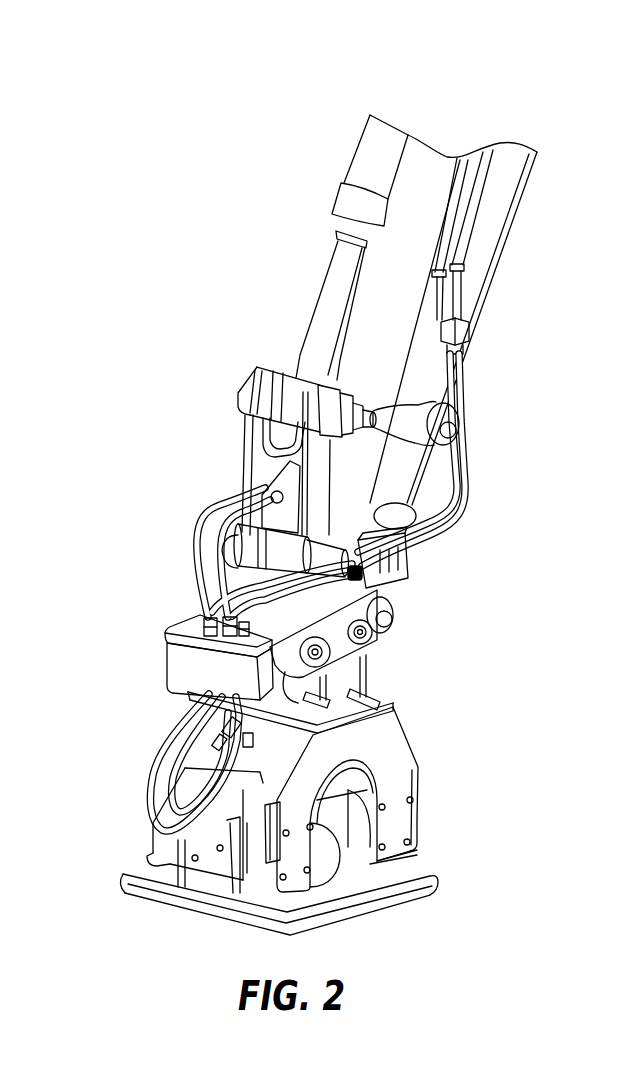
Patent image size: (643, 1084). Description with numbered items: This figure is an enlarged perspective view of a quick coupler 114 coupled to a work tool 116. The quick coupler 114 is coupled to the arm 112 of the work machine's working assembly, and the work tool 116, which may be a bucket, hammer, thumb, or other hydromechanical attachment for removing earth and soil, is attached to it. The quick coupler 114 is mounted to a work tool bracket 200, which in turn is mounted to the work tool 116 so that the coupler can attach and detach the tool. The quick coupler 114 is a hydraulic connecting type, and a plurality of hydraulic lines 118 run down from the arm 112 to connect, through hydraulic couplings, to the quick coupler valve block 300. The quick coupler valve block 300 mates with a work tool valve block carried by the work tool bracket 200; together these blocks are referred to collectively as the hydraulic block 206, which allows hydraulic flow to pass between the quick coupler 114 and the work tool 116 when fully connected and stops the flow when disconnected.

The arm 112 is at (483, 251).
The quick coupler 114 is at (336, 593).
The work tool 116 is at (392, 750).
The hydraulic lines 118 is at (447, 514).
The work tool bracket 200 is at (185, 671).
The hydraulic block 206 is at (173, 616).
The quick coupler valve block 300 is at (162, 633).